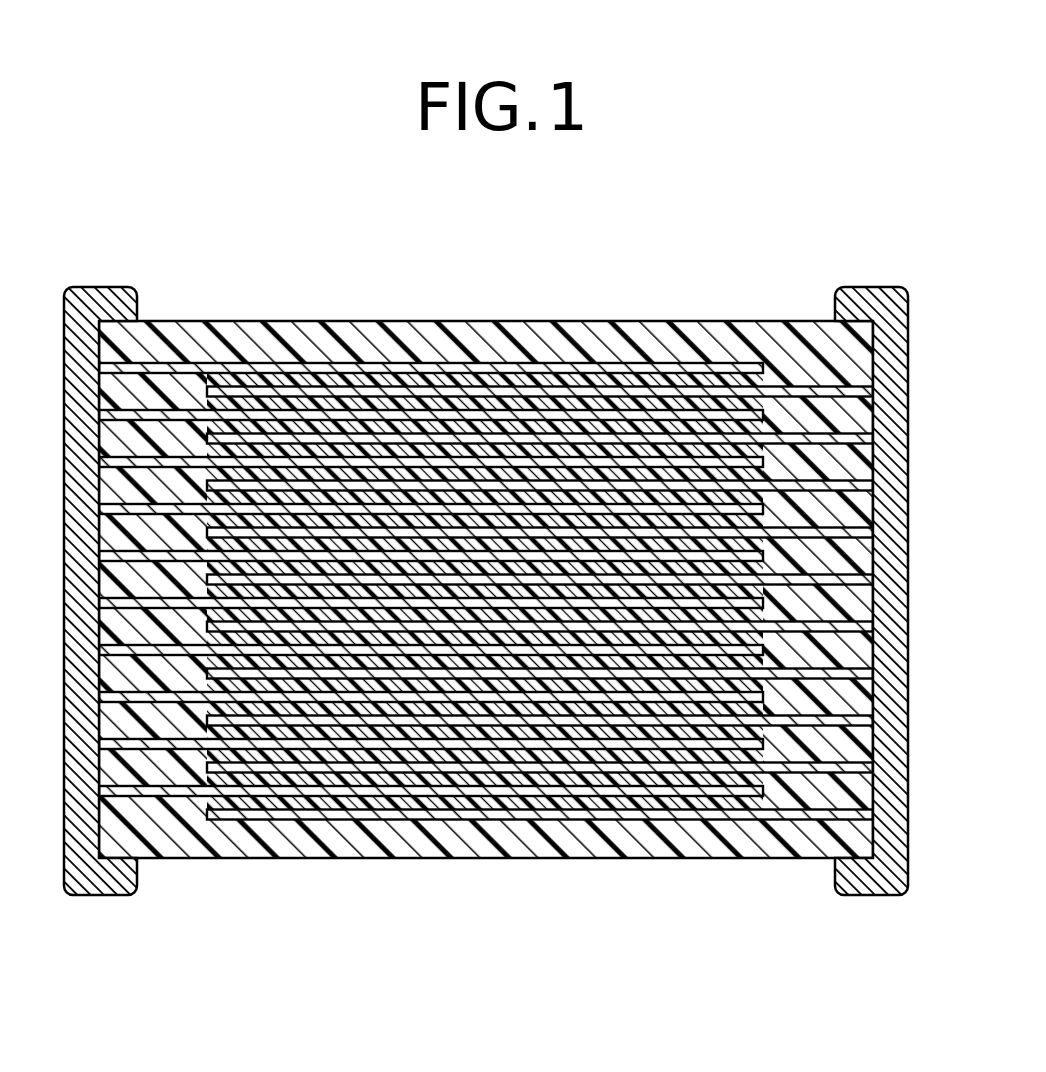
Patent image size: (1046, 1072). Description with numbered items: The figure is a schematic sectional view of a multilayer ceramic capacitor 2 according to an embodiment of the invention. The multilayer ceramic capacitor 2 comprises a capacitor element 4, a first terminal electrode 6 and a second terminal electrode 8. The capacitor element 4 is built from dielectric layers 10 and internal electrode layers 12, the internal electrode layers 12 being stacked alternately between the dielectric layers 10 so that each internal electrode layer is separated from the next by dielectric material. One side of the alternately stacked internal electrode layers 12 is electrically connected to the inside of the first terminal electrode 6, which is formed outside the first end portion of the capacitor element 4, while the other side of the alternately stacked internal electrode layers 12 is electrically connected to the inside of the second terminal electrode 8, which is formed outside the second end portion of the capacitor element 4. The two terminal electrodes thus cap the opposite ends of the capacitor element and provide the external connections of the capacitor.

The multilayer ceramic capacitor 2 is at (345, 897).
The capacitor element 4 is at (703, 858).
The first terminal electrode 6 is at (97, 880).
The second terminal electrode 8 is at (872, 303).
The dielectric layers 10 is at (428, 380).
The internal electrode layers 12 is at (543, 368).